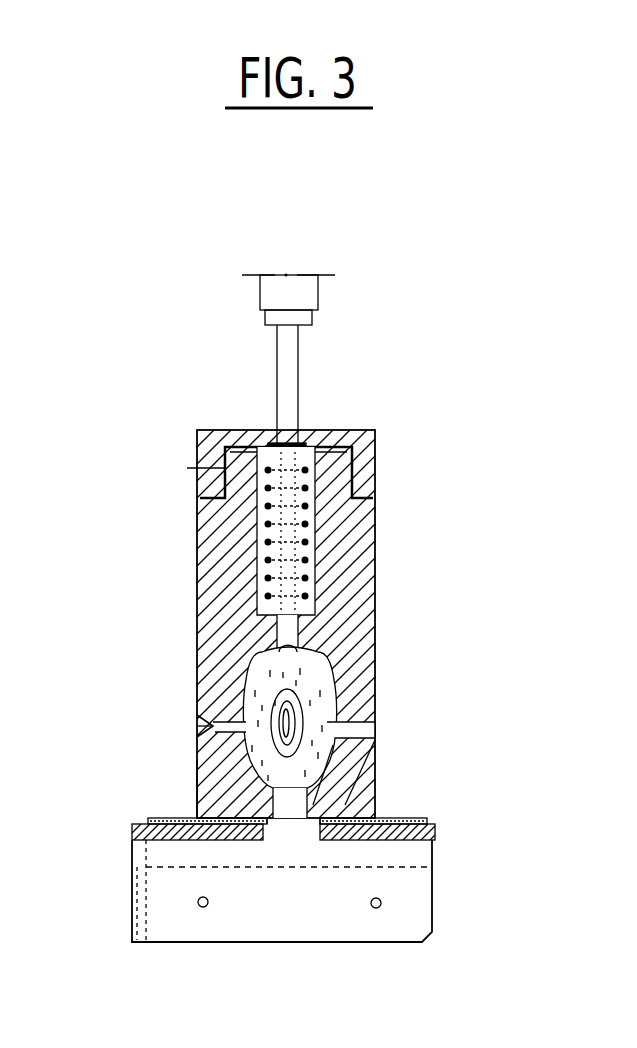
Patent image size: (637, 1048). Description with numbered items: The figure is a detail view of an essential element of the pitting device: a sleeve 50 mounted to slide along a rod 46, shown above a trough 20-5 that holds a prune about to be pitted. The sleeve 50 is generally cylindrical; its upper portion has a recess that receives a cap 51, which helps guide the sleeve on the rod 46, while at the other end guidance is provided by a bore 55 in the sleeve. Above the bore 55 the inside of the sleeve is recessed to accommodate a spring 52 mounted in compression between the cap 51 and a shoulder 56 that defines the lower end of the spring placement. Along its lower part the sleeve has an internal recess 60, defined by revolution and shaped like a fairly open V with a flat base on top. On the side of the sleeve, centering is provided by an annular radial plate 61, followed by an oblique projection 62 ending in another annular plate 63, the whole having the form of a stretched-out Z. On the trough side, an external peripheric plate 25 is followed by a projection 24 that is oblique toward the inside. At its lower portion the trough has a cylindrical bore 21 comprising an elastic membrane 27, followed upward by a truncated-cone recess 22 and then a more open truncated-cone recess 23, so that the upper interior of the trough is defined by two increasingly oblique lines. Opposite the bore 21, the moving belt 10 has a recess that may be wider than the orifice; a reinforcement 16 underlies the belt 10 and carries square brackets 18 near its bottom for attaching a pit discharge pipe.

The rod 46 is at (291, 354).
The sleeve 50 is at (213, 526).
The cap 51 is at (376, 460).
The spring 52 is at (300, 528).
The bore 55 is at (305, 632).
The shoulder 56 is at (276, 648).
The internal recess 60 is at (248, 670).
The annular radial plate 61 is at (200, 716).
The oblique projection 62 is at (200, 727).
The annular plate 63 is at (182, 740).
The projection 24 is at (340, 735).
The external peripheric plate 25 is at (382, 738).
The recess 23 is at (330, 764).
The recess 22 is at (320, 772).
The cylindrical bore 21 is at (300, 800).
The trough 20-5 is at (202, 780).
The belt 10 is at (158, 818).
The reinforcement 16 is at (130, 833).
The square bracket 18 is at (340, 927).
The elastic membrane 27 is at (279, 826).